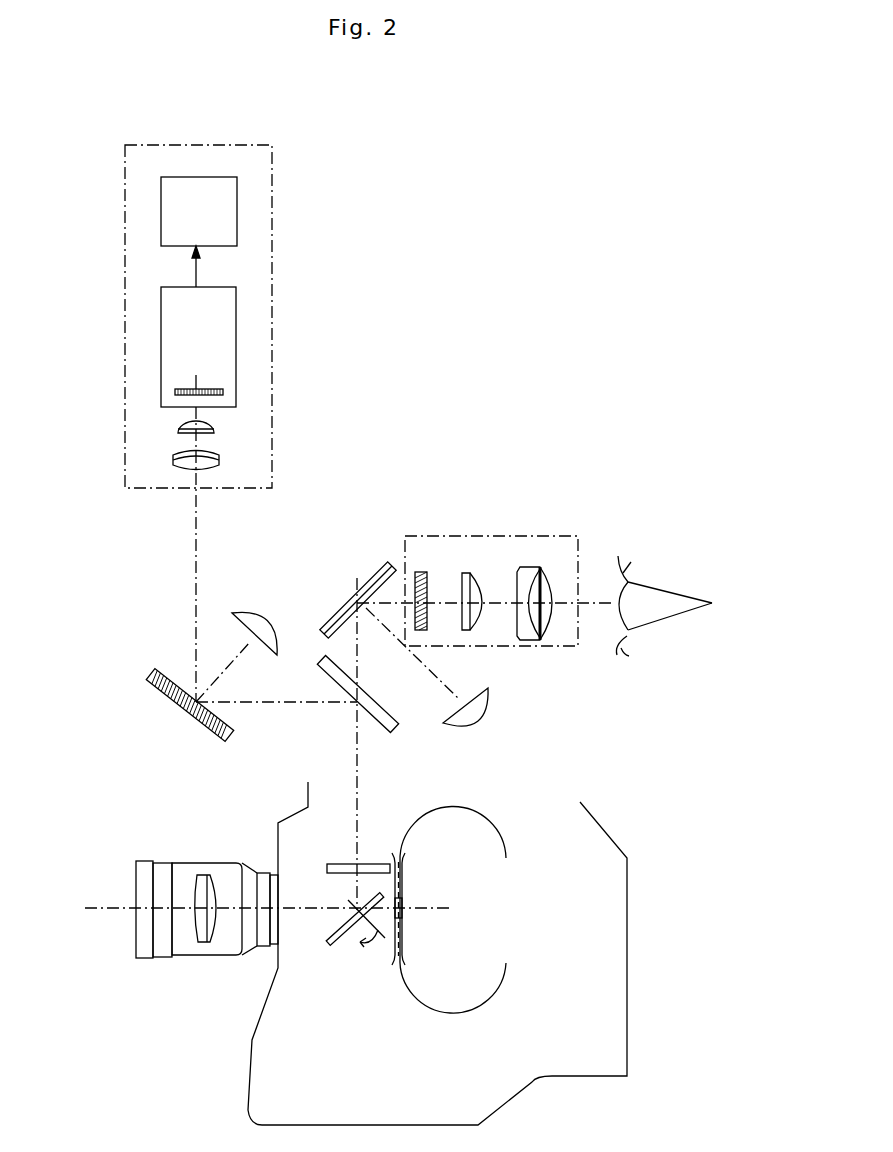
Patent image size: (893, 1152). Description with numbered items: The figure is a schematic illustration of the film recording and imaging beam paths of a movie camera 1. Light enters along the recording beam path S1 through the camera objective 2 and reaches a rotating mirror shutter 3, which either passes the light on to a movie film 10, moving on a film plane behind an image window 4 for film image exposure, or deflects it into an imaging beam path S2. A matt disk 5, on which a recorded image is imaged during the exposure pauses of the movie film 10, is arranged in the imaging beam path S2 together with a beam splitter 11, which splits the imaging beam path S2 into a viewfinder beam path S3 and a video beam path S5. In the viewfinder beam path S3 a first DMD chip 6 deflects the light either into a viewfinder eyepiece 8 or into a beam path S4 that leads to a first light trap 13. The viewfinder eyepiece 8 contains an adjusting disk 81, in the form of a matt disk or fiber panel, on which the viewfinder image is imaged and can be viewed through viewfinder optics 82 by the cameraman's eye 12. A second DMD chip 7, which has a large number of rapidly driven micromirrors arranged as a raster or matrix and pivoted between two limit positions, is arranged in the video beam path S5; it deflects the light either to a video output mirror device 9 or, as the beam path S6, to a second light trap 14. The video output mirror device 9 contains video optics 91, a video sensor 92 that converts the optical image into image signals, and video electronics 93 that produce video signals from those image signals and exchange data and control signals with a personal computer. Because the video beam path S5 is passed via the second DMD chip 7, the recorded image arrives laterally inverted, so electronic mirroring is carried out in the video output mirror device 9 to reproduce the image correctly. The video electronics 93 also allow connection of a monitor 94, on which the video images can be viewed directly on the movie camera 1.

The movie camera 1 is at (595, 1042).
The camera objective 2 is at (183, 945).
The rotating mirror shutter 3 is at (342, 944).
The image window 4 is at (402, 898).
The matt disk 5 is at (338, 867).
The first DMD chip 6 is at (370, 578).
The second DMD chip 7 is at (172, 690).
The viewfinder eyepiece 8 is at (557, 542).
The video output mirror device 9 is at (253, 300).
The movie film 10 is at (435, 1010).
The beam splitter 11 is at (395, 727).
The cameraman's eye 12 is at (665, 600).
The first light trap 13 is at (468, 713).
The second light trap 14 is at (255, 618).
The adjusting disk 81 is at (422, 570).
The viewfinder optics 82 is at (478, 582).
The video optics 91 is at (205, 443).
The video sensor 92 is at (223, 391).
The video electronics 93 is at (170, 325).
The monitor 94 is at (167, 200).
The recording beam path S1 is at (91, 910).
The imaging beam path S2 is at (358, 806).
The viewfinder beam path S3 is at (595, 602).
The beam path to first light trap S4 is at (428, 672).
The video beam path S5 is at (195, 540).
The beam path to second light trap S6 is at (218, 673).